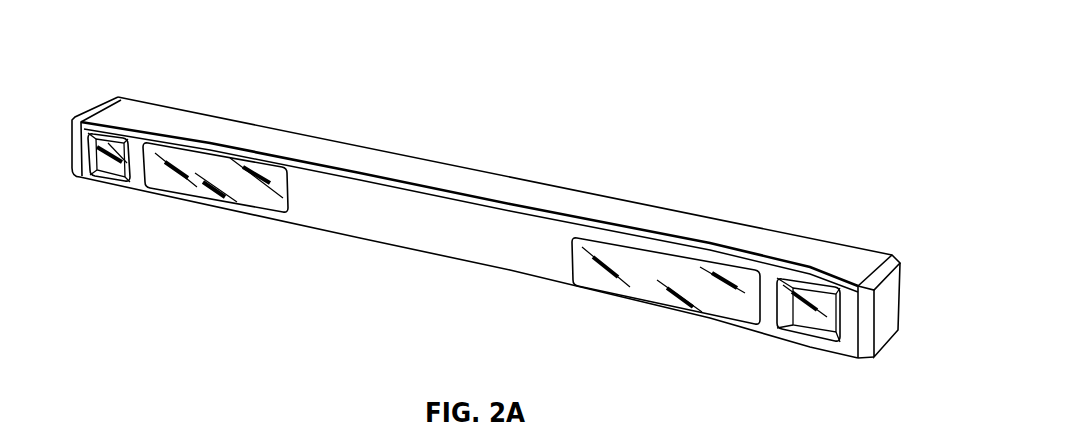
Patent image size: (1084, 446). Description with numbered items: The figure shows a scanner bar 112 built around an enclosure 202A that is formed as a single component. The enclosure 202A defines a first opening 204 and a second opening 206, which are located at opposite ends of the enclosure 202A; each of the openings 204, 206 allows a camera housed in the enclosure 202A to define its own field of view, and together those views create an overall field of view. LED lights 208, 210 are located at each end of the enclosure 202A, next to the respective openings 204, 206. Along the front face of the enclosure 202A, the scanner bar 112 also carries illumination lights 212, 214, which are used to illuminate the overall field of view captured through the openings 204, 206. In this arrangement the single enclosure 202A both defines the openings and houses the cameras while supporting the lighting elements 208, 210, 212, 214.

The scanner bar 112 is at (770, 103).
The enclosure 202A is at (448, 176).
The first opening 204 is at (108, 174).
The second opening 206 is at (810, 324).
The LED light 208 is at (70, 118).
The LED light 210 is at (885, 308).
The illumination light 212 is at (204, 160).
The illumination light 214 is at (658, 263).